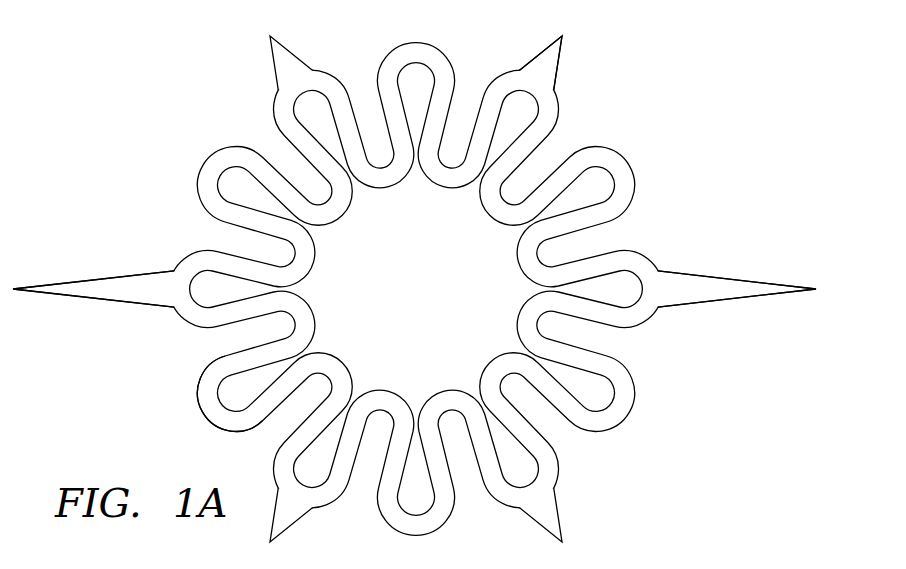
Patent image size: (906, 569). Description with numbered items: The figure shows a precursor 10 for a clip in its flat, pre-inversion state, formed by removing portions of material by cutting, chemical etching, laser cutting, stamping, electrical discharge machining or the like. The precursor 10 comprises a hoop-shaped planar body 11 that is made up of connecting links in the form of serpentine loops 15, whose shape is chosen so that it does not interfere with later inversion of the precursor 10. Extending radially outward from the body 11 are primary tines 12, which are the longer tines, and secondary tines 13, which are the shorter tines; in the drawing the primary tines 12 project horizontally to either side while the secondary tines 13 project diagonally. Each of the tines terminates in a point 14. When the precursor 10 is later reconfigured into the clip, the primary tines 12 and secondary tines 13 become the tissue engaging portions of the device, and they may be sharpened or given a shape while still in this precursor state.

The precursor 10 is at (415, 276).
The hoop-shaped planar body 11 is at (608, 365).
The primary tines 12 is at (95, 279).
The secondary tines 13 is at (554, 90).
The point 14 is at (561, 37).
The loops 15 is at (203, 416).